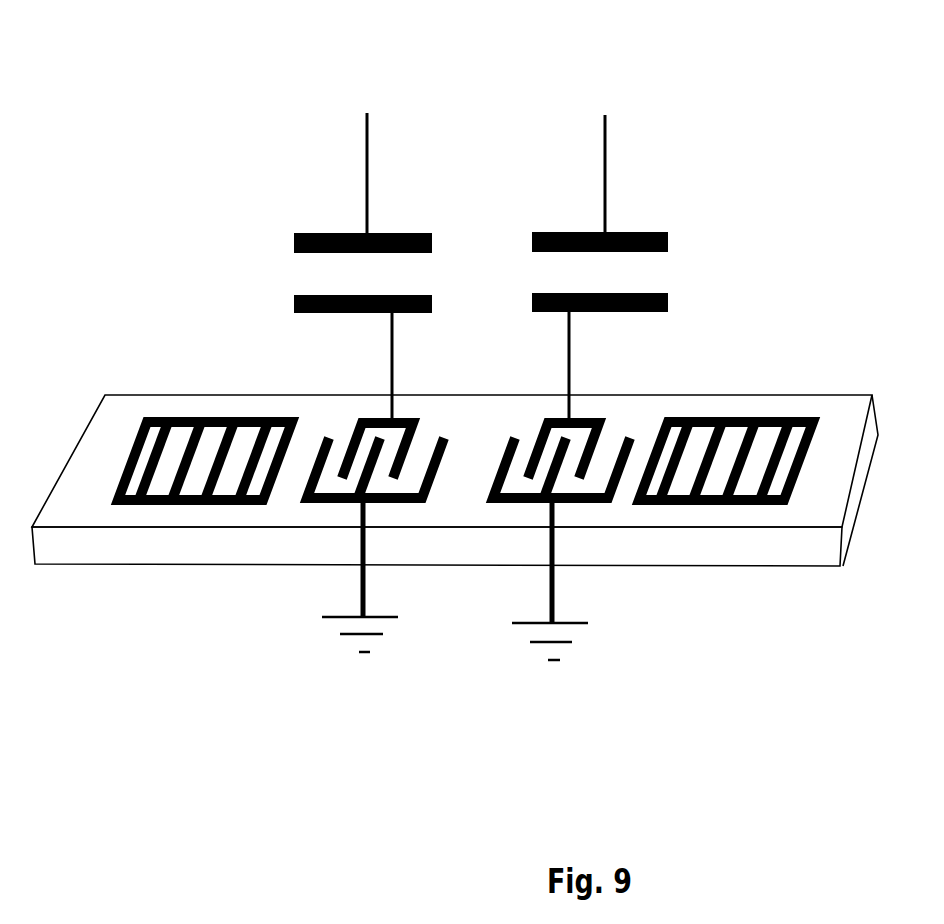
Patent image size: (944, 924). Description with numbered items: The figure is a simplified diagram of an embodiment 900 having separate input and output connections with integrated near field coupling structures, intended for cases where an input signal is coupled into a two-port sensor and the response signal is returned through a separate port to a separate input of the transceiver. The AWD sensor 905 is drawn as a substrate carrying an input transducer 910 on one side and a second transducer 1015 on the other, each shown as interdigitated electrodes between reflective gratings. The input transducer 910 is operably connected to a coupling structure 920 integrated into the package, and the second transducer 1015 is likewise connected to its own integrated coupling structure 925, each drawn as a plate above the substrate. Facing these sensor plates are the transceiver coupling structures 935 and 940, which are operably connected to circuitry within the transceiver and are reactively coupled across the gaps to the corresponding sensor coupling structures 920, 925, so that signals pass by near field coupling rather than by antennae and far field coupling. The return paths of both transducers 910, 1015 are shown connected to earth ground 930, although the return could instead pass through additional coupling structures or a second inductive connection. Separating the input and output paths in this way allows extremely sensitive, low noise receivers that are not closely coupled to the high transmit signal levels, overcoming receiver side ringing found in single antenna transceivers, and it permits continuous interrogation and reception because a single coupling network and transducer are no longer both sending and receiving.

The embodiment 900 is at (78, 40).
The AWD sensor 905 is at (163, 393).
The input transducer 910 is at (335, 432).
The second interdigital transducer 1015 is at (612, 430).
The coupling structure 920 is at (307, 290).
The transceiver coupling structure 935 is at (332, 233).
The second capacitor lower plate 925 is at (658, 292).
The transceiver coupling structure 940 is at (640, 230).
The earth ground 930 is at (532, 647).